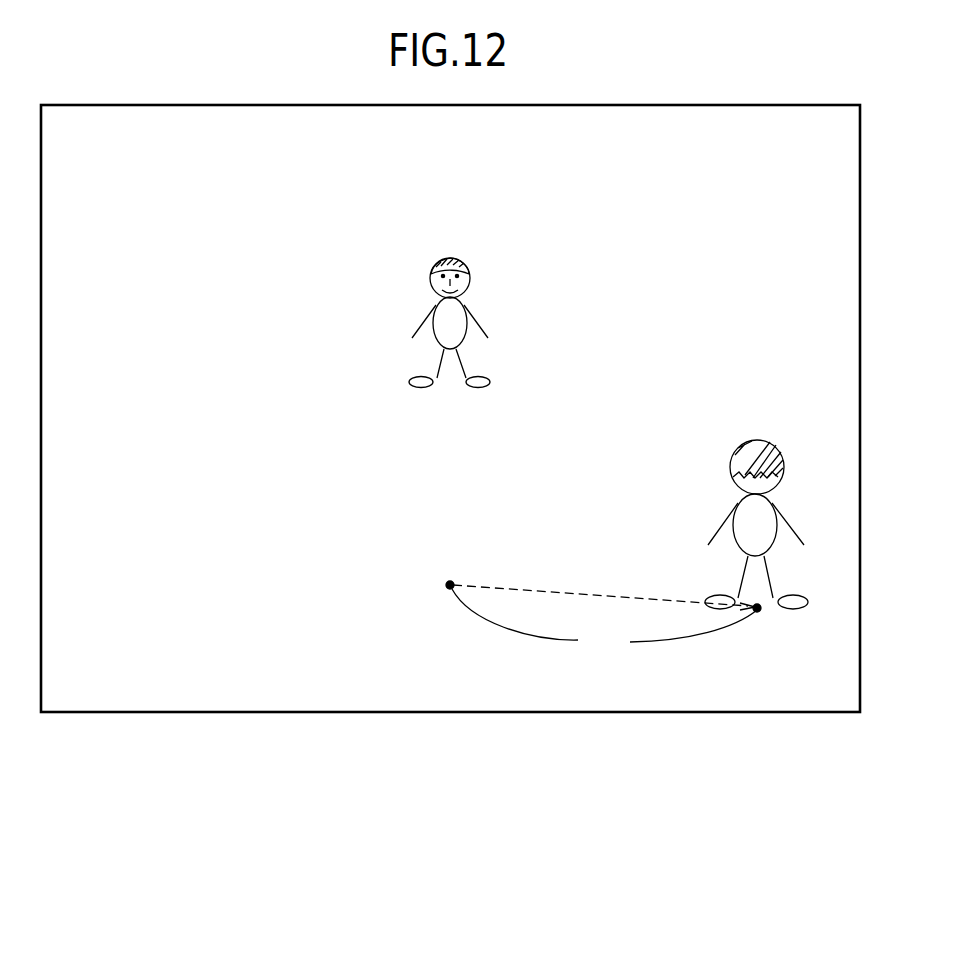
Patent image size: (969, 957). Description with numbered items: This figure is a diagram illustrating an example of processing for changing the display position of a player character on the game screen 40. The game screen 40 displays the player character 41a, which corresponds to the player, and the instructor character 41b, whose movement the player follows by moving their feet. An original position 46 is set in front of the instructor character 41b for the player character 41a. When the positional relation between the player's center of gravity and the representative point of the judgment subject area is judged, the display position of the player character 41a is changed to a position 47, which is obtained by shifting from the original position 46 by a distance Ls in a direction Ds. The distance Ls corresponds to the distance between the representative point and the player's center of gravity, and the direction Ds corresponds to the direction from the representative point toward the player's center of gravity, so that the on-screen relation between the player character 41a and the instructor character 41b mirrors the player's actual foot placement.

The game screen 40 is at (777, 713).
The player character 41a is at (730, 462).
The instructor character 41b is at (470, 272).
The original position 46 is at (446, 585).
The position 47 is at (760, 610).
The direction Ds is at (604, 582).
The distance Ls is at (604, 622).